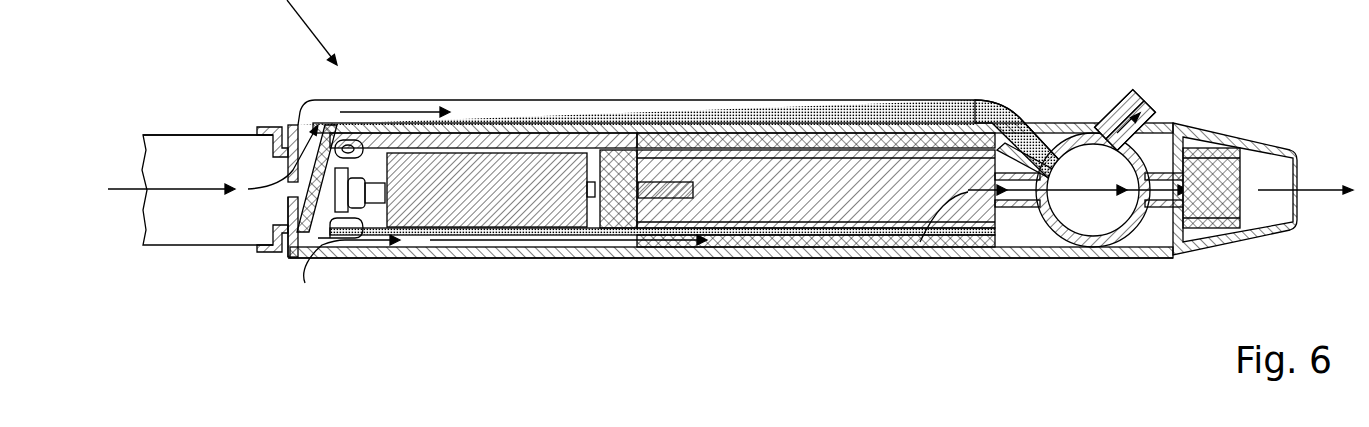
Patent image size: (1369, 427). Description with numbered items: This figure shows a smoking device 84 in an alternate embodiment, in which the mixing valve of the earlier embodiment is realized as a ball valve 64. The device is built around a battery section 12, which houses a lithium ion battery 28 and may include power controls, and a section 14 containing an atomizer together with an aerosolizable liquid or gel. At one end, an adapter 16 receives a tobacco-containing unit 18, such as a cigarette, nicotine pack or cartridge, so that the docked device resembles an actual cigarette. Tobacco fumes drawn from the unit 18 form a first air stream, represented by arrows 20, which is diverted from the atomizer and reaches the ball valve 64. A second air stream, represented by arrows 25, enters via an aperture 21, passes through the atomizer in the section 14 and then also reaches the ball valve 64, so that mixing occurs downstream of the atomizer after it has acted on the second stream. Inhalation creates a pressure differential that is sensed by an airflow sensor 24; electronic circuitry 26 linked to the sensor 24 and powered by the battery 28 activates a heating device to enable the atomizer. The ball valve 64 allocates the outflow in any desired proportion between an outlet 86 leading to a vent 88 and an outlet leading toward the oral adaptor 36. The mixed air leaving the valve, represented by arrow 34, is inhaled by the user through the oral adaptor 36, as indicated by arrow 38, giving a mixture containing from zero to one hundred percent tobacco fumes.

The battery section 12 is at (487, 240).
The section 14 is at (945, 165).
The adapter 16 is at (263, 123).
The tobacco-containing unit 18 is at (212, 245).
The first air intake 20 is at (197, 187).
The aperture 21 is at (305, 238).
The airflow sensor 24 is at (395, 130).
The second air stream 25 is at (668, 240).
The electronic circuitry 26 is at (387, 253).
The lithium ion battery 28 is at (490, 170).
The air outflow 34 is at (1147, 240).
The oral adaptor 36 is at (1297, 177).
The inhalation flow 38 is at (1315, 193).
The ball valve 64 is at (1117, 240).
The smoking device 84 is at (1097, 123).
The outlet 86 is at (1123, 93).
The vent 88 is at (1133, 240).